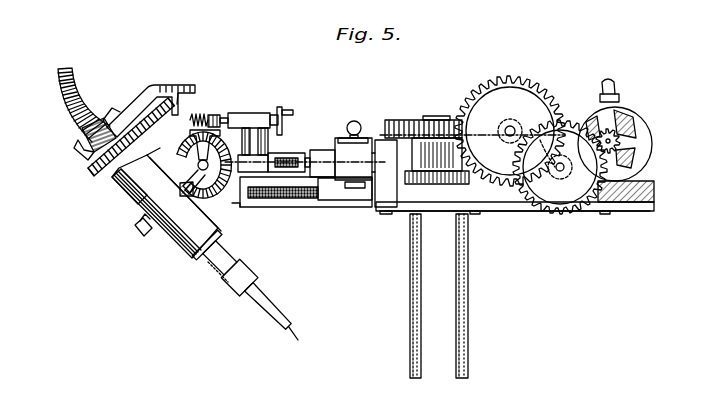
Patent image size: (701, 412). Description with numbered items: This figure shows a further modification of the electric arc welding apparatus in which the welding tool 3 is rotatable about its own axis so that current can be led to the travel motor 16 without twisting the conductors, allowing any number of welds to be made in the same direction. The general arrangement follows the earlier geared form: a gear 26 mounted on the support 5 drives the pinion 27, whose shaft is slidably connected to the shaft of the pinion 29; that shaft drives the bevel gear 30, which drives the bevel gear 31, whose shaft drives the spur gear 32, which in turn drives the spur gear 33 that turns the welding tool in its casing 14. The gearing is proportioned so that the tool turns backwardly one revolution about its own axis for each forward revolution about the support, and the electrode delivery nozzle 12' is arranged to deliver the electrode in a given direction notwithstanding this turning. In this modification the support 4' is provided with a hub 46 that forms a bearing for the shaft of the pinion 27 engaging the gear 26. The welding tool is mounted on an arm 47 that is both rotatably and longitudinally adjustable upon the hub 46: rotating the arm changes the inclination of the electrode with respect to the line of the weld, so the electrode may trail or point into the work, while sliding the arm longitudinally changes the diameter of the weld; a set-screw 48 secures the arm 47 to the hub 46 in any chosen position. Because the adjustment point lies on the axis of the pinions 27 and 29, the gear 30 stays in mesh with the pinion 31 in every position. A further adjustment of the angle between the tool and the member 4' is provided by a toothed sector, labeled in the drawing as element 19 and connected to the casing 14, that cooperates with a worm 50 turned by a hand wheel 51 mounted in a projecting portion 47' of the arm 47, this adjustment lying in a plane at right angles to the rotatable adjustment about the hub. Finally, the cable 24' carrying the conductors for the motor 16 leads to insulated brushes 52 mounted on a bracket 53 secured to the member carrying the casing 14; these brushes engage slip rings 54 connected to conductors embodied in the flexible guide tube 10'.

The welding tool 3 is at (128, 208).
The support 4' is at (515, 221).
The support 5 is at (452, 269).
The flexible guide tube 10' is at (68, 105).
The electrode delivery nozzle 12' is at (245, 285).
The casing 14 is at (112, 190).
The travel motor 16 is at (632, 118).
The spring 19 is at (193, 112).
The cable 24' is at (544, 134).
The gear 26 is at (440, 182).
The pinion 27 is at (410, 163).
The pinion 29 is at (226, 200).
The bevel gear 30 is at (166, 206).
The bevel gear 31 is at (172, 148).
The spur gear 32 is at (148, 96).
The spur gear 33 is at (90, 176).
The hub 46 is at (338, 156).
The arm 47 is at (302, 208).
The projecting portion 47' is at (249, 122).
The set-screw 48 is at (357, 128).
The worm 50 is at (209, 113).
The hand wheel 51 is at (284, 111).
The insulated brushes 52 is at (102, 117).
The bracket 53 is at (180, 98).
The slip rings 54 is at (78, 150).